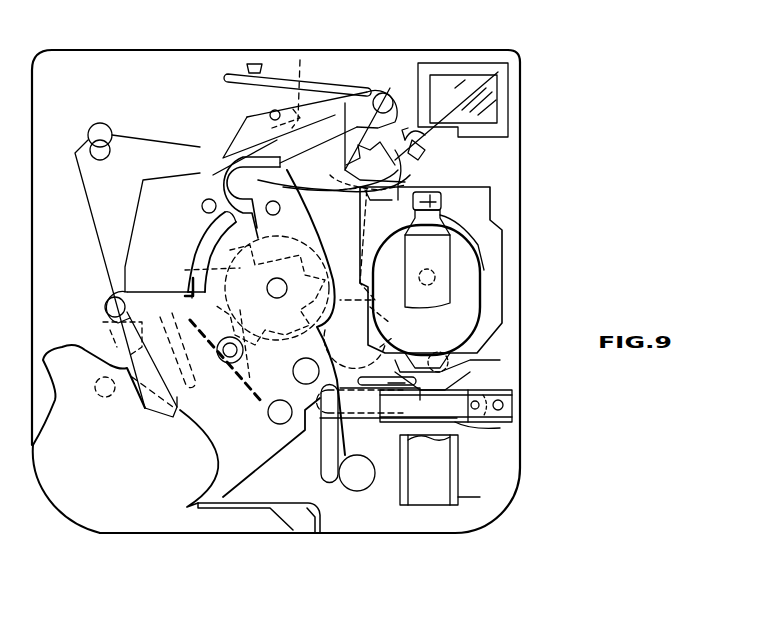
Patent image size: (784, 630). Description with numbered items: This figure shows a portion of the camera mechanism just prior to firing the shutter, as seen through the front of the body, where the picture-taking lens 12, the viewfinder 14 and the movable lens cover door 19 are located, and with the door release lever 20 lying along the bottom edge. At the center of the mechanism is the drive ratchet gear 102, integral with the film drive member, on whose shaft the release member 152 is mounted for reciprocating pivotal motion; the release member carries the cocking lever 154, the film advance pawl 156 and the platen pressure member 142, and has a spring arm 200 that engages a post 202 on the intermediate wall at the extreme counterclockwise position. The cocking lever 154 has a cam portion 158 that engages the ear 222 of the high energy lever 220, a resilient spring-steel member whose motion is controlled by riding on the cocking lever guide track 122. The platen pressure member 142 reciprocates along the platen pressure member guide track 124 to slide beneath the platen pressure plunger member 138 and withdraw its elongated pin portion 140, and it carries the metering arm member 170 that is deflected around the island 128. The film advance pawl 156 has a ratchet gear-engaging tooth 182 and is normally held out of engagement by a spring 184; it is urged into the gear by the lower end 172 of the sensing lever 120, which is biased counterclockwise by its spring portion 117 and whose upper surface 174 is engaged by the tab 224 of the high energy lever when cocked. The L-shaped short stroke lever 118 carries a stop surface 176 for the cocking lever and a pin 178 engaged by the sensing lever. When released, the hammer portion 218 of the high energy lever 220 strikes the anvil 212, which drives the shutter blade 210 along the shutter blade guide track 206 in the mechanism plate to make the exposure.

The picture-taking lens 12 is at (450, 290).
The viewfinder 14 is at (485, 108).
The movable lens cover door 19 is at (358, 345).
The door release lever 20 is at (110, 515).
The drive ratchet gear 102 is at (186, 265).
The spring portion 117 is at (240, 70).
The short stroke lever 118 is at (133, 142).
The sensing lever 120 is at (330, 115).
The cocking lever guide track 122 is at (467, 190).
The platen pressure member guide track 124 is at (413, 388).
The metering member island 128 is at (425, 357).
The platen pressure plunger member 138 is at (475, 418).
The elongated pin portion 140 is at (505, 405).
The platen pressure member 142 is at (417, 408).
The release member 152 is at (256, 460).
The cocking lever 154 is at (348, 112).
The film advance pawl 156 is at (208, 238).
The cam portion 158 is at (407, 153).
The metering arm member 170 is at (440, 362).
The lower end of sensing lever 172 is at (202, 207).
The surface of sensing lever 174 is at (240, 155).
The stop surface 176 is at (302, 45).
The pin 178 is at (275, 112).
The ratchet gear-engaging tooth 182 is at (103, 322).
The spring 184 is at (233, 393).
The spring arm 200 is at (322, 478).
The post 202 is at (360, 488).
The shutter blade guide track 206 is at (408, 483).
The shutter blade 210 is at (440, 277).
The anvil 212 is at (437, 258).
The hammer or shutter actuating portion 218 is at (400, 170).
The high energy lever 220 is at (442, 204).
The ear 222 is at (498, 72).
The tab 224 is at (417, 145).